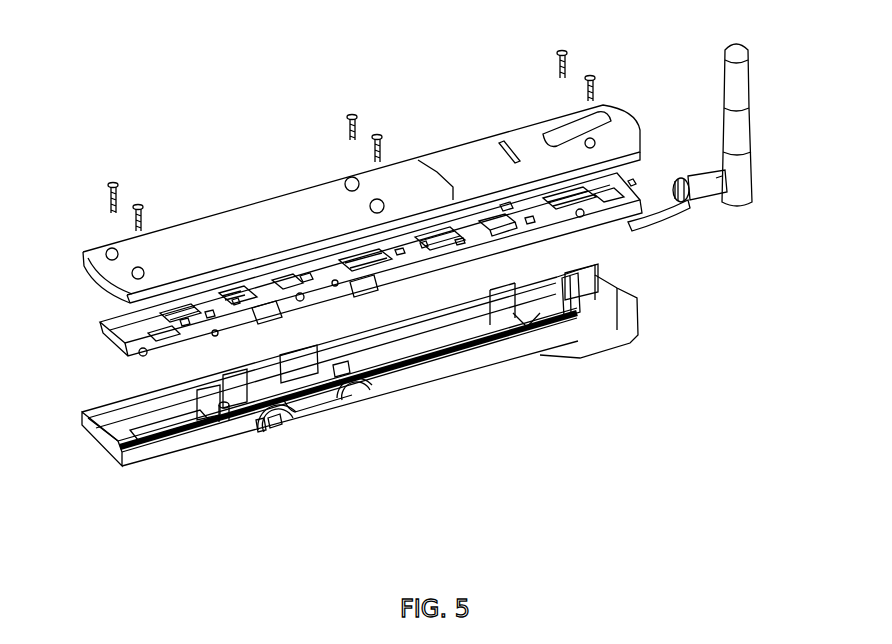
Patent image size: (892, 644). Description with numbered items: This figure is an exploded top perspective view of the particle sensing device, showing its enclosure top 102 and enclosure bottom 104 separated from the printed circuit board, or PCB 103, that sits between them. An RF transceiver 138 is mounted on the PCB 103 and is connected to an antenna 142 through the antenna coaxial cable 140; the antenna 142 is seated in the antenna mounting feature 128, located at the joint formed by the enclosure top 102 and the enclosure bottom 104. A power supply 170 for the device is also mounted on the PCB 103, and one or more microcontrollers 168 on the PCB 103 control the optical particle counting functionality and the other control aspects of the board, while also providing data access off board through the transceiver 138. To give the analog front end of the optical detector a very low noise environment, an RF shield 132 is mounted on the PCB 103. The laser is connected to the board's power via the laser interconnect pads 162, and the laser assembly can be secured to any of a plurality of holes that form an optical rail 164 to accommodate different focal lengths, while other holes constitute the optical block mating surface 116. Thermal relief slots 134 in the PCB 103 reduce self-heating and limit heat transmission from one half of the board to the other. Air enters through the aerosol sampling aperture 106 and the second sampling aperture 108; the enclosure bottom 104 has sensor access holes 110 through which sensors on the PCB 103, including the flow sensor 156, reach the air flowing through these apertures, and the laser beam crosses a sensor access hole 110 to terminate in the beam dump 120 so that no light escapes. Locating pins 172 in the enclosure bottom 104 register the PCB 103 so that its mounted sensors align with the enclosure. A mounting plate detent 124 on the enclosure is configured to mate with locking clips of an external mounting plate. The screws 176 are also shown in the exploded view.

The enclosure top 102 is at (197, 238).
The PCB 103 is at (123, 343).
The enclosure bottom 104 is at (152, 458).
The aerosol sampling aperture 106 is at (273, 422).
The second sampling aperture 108 is at (367, 375).
The sensor access hole 110 is at (383, 385).
The optical block mating surface 116 is at (260, 425).
The beam dump 120 is at (337, 370).
The mounting plate detent 124 is at (515, 145).
The antenna mounting feature 128 is at (617, 302).
The RF shield 132 is at (258, 290).
The thermal relief slots 134 is at (358, 292).
The RF transceiver 138 is at (497, 230).
The antenna coaxial cable 140 is at (650, 238).
The antenna 142 is at (738, 148).
The flow sensor 156 is at (265, 323).
The laser interconnect pads 162 is at (140, 235).
The optical rail 164 is at (157, 340).
The microcontrollers 168 is at (305, 280).
The power supply 170 is at (453, 230).
The locating pins 172 is at (573, 278).
The screws 176 is at (592, 75).